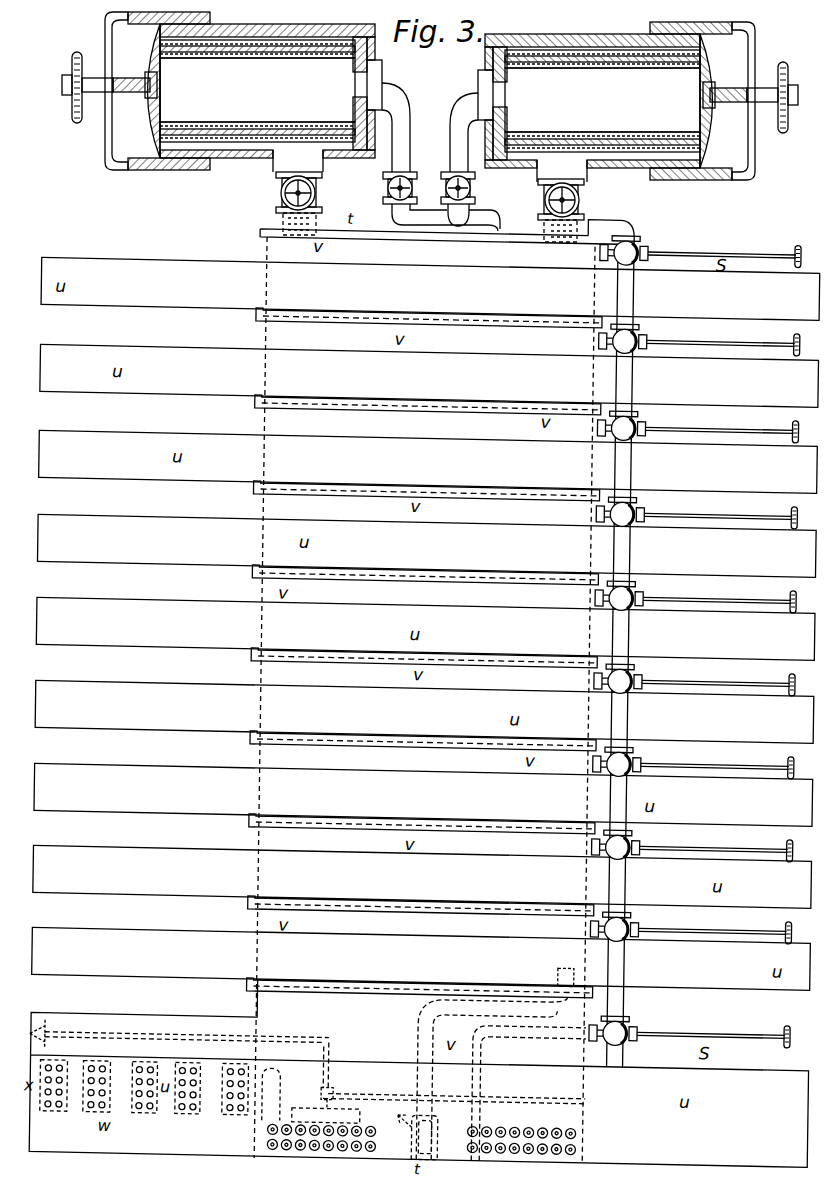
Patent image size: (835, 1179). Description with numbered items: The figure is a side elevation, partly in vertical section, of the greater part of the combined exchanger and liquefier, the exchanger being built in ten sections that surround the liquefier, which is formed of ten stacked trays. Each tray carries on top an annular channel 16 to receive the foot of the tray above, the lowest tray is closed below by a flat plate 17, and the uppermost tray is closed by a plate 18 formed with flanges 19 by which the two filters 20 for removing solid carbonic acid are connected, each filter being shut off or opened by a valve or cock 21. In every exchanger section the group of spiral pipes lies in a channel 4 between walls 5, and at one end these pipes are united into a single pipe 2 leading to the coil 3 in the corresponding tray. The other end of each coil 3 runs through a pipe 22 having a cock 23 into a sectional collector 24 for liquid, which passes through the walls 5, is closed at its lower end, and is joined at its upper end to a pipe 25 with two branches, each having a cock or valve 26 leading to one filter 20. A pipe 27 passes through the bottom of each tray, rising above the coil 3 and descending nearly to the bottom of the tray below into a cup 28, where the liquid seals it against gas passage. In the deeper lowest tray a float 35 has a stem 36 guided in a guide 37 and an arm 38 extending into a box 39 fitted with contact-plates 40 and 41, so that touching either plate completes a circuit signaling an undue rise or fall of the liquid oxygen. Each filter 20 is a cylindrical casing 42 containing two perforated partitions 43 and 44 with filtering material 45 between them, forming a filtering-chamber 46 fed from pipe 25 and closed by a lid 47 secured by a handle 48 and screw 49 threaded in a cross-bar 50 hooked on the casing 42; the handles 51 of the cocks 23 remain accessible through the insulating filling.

The single pipe 2 is at (278, 1094).
The coil 3 is at (415, 1131).
The channel 4 is at (146, 1118).
The walls 5 is at (144, 1087).
The annular channel 16 is at (413, 656).
The flat plate 17 is at (411, 1137).
The plate 18 is at (447, 227).
The flanges 19 is at (272, 222).
The filters 20 is at (430, 102).
The valves or cocks 21 is at (276, 196).
The pipe 22 is at (542, 703).
The cock 23 is at (633, 639).
The collector for liquid 24 is at (640, 252).
The pipe 25 is at (453, 217).
The cock or valve 26 is at (426, 143).
The pipe 27 is at (495, 1063).
The cup 28 is at (451, 1125).
The float 35 is at (336, 1113).
The stem 36 is at (337, 1075).
The guide 37 is at (343, 1090).
The arm 38 is at (187, 1028).
The box 39 is at (419, 1071).
The contact-plate 40 is at (48, 1021).
The contact-plate 41 is at (48, 1042).
The cylindrical casing 42 is at (282, 36).
The cylindrical perforated partition 43 is at (266, 53).
The cylindrical perforated partition 44 is at (270, 40).
The filtering material 45 is at (216, 58).
The filtering-chamber 46 is at (430, 98).
The lid 47 is at (145, 140).
The handle 48 is at (430, 106).
The screw 49 is at (122, 84).
The cross-bar 50 is at (432, 96).
The handles 51 is at (729, 645).